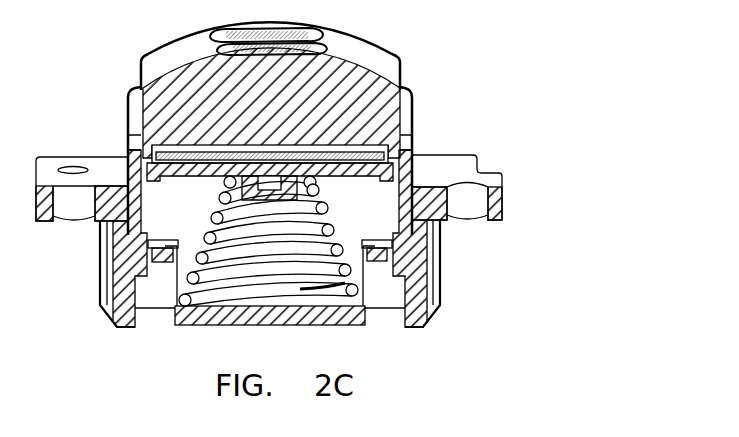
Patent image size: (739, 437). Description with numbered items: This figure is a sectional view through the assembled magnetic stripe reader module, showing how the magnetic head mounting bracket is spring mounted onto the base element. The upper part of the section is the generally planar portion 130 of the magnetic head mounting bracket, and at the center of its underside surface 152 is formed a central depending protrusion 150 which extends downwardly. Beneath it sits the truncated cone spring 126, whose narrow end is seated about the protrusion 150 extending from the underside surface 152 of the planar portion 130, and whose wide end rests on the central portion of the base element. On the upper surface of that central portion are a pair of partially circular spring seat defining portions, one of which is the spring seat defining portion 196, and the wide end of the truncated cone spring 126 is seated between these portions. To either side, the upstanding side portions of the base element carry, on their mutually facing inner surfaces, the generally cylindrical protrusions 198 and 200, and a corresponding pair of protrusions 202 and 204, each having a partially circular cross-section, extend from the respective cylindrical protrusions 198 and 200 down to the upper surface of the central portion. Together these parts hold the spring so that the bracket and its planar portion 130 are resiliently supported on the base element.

The truncated cone spring 126 is at (222, 267).
The planar portion 130 is at (217, 157).
The central depending protrusion 150 is at (279, 158).
The underside surface 152 is at (128, 178).
The spring seat defining portion 196 is at (182, 240).
The cylindrical protrusion 198 is at (138, 255).
The cylindrical protrusion 200 is at (407, 250).
The protrusion 202 is at (137, 297).
The protrusion 204 is at (389, 305).